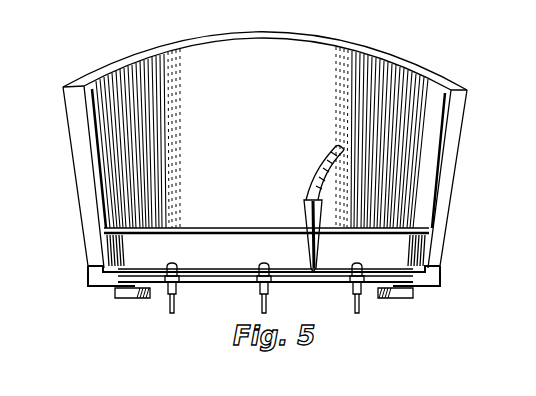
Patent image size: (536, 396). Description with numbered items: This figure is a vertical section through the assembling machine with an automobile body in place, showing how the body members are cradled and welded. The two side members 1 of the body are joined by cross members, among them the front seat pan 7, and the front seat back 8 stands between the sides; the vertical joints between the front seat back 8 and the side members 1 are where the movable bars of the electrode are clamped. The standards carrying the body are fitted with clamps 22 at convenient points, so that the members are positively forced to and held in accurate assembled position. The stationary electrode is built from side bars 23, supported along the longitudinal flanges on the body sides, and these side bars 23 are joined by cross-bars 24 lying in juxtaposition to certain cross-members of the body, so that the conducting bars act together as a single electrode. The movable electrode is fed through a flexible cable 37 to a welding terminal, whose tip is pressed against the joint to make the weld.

The side member 1 is at (68, 132).
The front seat pan 7 is at (243, 229).
The front seat back 8 is at (262, 137).
The clamp 22 is at (176, 265).
The side bar 23 is at (146, 299).
The cross-bar 24 is at (212, 283).
The flexible cable 37 is at (323, 163).